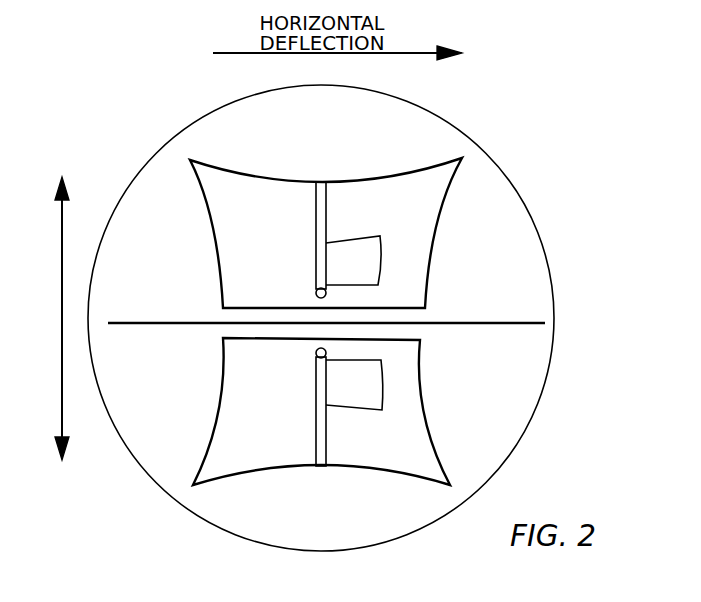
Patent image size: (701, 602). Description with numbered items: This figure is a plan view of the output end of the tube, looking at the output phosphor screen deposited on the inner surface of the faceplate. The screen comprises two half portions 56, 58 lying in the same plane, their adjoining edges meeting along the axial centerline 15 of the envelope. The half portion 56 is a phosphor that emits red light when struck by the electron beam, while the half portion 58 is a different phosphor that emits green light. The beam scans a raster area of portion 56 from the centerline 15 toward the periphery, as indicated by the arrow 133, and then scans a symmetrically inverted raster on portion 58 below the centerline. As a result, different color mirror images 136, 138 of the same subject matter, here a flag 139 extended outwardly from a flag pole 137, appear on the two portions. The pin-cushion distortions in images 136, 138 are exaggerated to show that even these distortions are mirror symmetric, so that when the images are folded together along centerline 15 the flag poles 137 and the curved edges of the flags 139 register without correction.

The axial centerline 15 is at (500, 323).
The screen half portion 56 is at (531, 221).
The screen half portion 58 is at (546, 360).
The arrow 133 is at (63, 221).
The image 136 is at (425, 162).
The flag pole 137 is at (327, 197).
The image 138 is at (372, 468).
The flag 139 is at (373, 263).